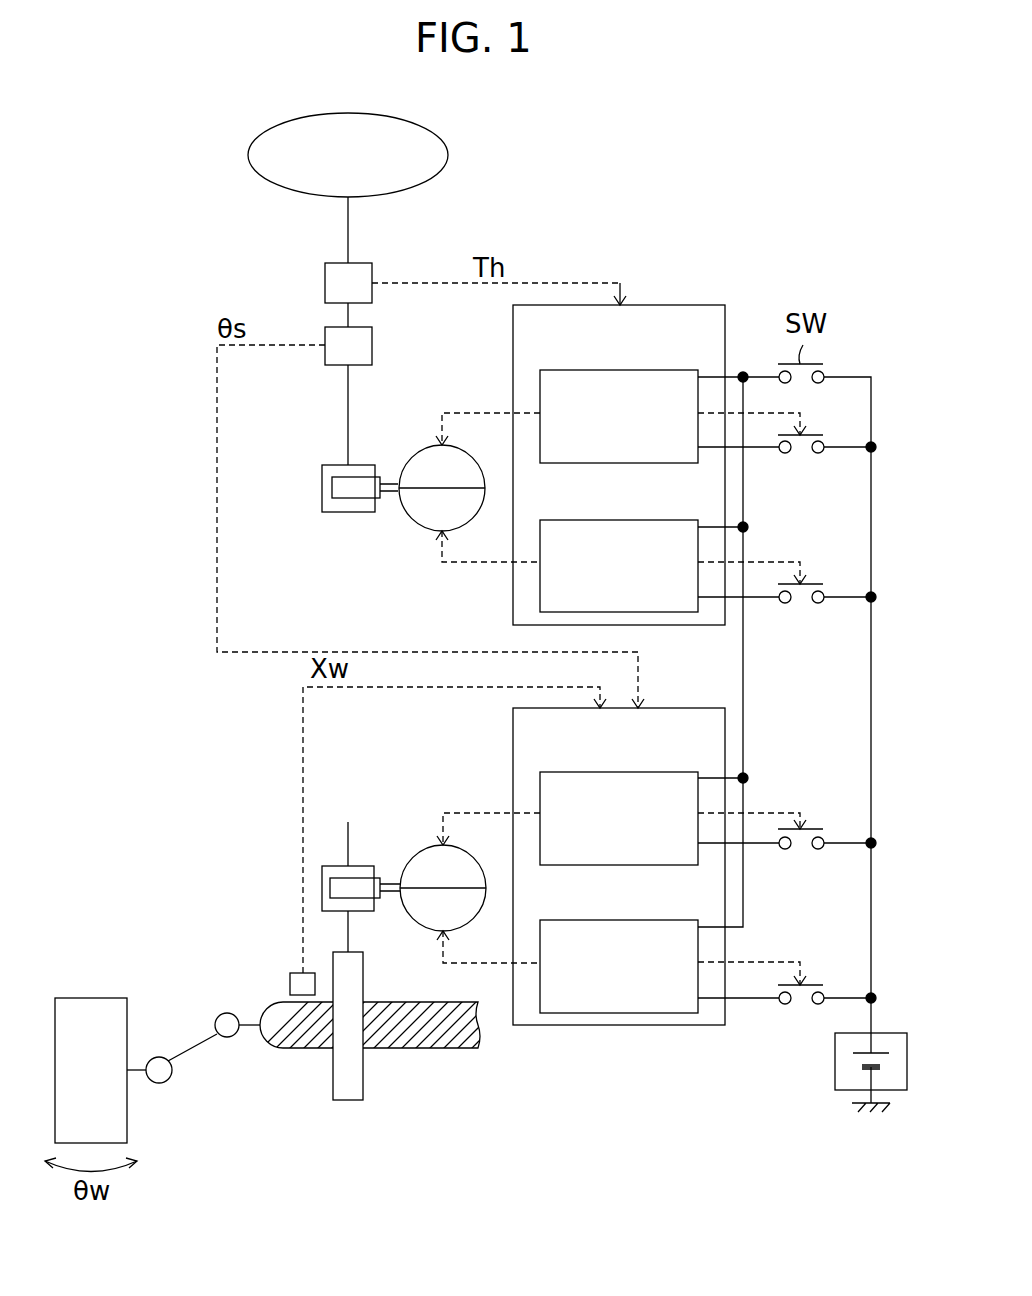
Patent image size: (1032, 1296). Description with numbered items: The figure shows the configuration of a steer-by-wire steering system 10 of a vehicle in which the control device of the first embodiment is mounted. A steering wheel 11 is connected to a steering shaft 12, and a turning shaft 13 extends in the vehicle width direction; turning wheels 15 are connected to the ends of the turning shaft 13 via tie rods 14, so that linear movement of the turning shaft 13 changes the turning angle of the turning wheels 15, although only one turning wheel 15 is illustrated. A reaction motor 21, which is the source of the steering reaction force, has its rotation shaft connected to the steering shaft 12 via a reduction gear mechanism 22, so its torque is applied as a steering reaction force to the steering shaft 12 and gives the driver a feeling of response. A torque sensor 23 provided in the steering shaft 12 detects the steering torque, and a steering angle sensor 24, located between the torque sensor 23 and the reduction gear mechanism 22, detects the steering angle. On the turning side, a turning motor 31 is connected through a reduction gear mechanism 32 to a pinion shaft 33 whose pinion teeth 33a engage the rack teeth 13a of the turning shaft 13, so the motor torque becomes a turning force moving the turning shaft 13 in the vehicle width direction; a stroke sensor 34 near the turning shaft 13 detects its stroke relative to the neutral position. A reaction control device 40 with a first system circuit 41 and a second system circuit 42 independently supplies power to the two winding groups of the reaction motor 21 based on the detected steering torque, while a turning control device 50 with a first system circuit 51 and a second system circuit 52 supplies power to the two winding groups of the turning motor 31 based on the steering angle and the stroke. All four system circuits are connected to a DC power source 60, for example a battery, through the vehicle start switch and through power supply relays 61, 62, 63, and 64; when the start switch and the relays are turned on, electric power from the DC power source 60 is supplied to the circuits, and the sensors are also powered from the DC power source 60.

The steering system 10 is at (195, 297).
The steering wheel 11 is at (248, 156).
The steering shaft 12 is at (348, 233).
The turning shaft 13 is at (385, 1053).
The rack teeth 13a is at (400, 1036).
The tie rod 14 is at (186, 1045).
The turning wheel 15 is at (88, 998).
The reaction motor 21 is at (418, 455).
The reduction gear mechanism 22 is at (317, 518).
The torque sensor 23 is at (325, 284).
The steering angle sensor 24 is at (330, 367).
The turning motor 31 is at (418, 855).
The reduction gear mechanism 32 is at (364, 845).
The pinion shaft 33 is at (350, 930).
The pinion teeth 33a is at (364, 975).
The stroke sensor 34 is at (293, 973).
The reaction control device 40 is at (688, 305).
The first system circuit 41 is at (665, 465).
The second system circuit 42 is at (568, 520).
The turning control device 50 is at (688, 708).
The first system circuit 51 is at (665, 866).
The second system circuit 52 is at (568, 920).
The DC power source 60 is at (835, 1055).
The power supply relay 61 is at (808, 433).
The power supply relay 62 is at (808, 583).
The power supply relay 63 is at (808, 828).
The power supply relay 64 is at (808, 984).